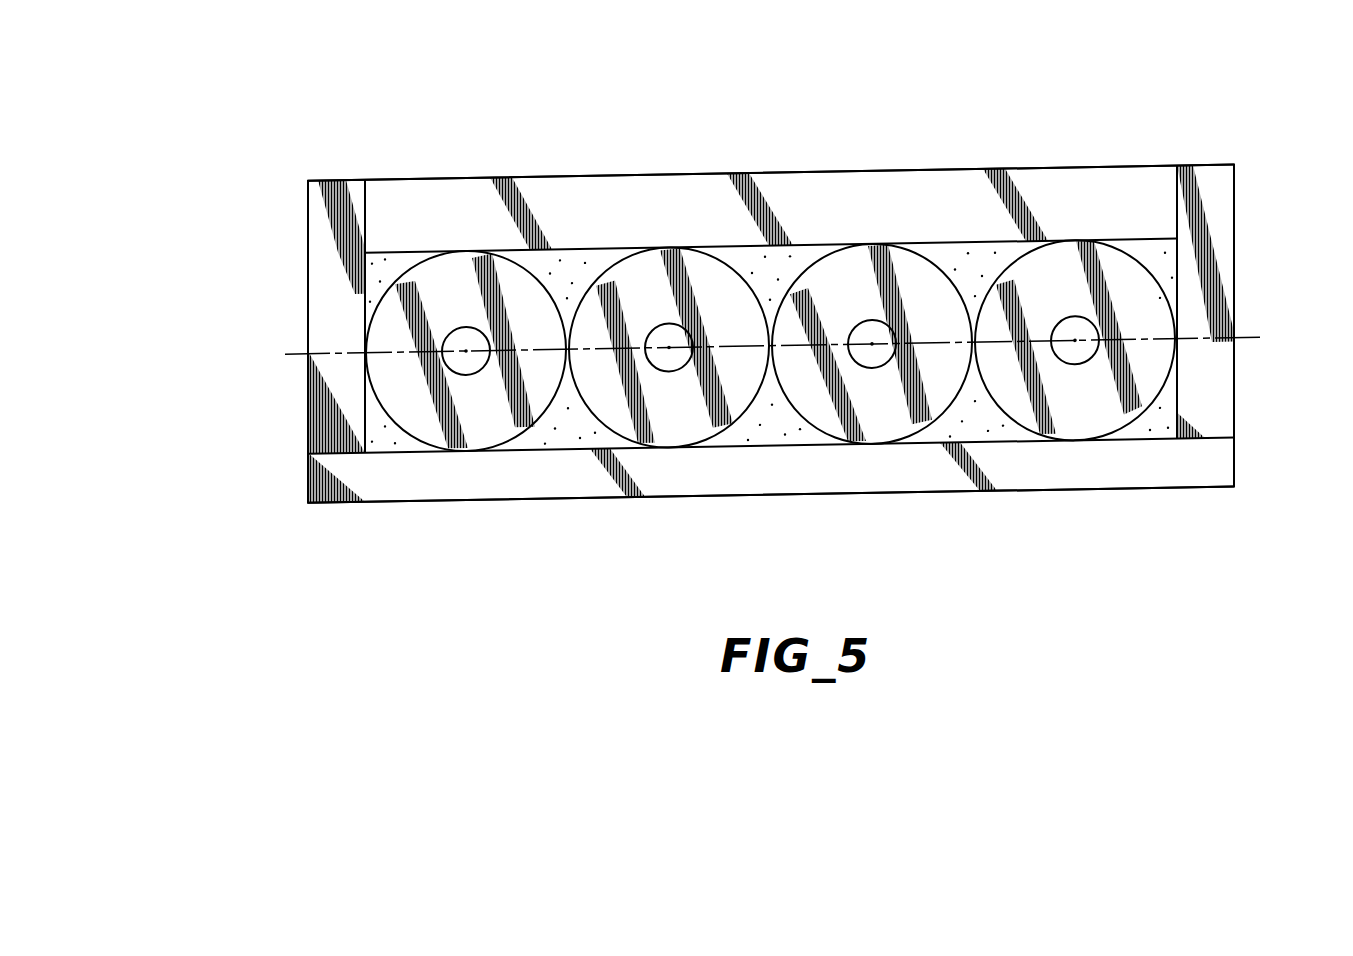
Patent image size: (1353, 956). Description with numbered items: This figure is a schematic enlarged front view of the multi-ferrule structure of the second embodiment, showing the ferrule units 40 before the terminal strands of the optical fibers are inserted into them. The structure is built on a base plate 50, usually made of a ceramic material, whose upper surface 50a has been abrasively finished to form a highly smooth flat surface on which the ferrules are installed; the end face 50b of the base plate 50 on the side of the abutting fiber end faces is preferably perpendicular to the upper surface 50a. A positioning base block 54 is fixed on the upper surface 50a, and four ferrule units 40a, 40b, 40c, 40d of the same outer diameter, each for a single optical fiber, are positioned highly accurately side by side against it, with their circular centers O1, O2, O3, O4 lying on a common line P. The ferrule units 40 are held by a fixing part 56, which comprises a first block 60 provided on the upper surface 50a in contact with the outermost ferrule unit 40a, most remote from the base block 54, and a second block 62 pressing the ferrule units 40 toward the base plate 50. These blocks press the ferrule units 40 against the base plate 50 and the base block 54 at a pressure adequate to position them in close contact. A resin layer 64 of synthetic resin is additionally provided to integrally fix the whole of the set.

The ferrule units 40 is at (398, 104).
The ferrule unit 40a is at (460, 255).
The ferrule unit 40b is at (657, 255).
The ferrule unit 40c is at (858, 253).
The ferrule unit 40d is at (1068, 245).
The base plate 50 is at (343, 505).
The upper surface 50a is at (388, 447).
The end face 50b is at (1220, 465).
The positioning base block 54 is at (1233, 380).
The fixing part 56 is at (175, 168).
The first block 60 is at (307, 253).
The second block 62 is at (380, 181).
The resin layer 64 is at (370, 290).
The center line of fiber cores P is at (1260, 337).
The center of optical fiber 40a O1 is at (466, 352).
The center of optical fiber 40b O2 is at (670, 347).
The center of optical fiber 40c O3 is at (875, 344).
The center of optical fiber 40d O4 is at (1075, 341).